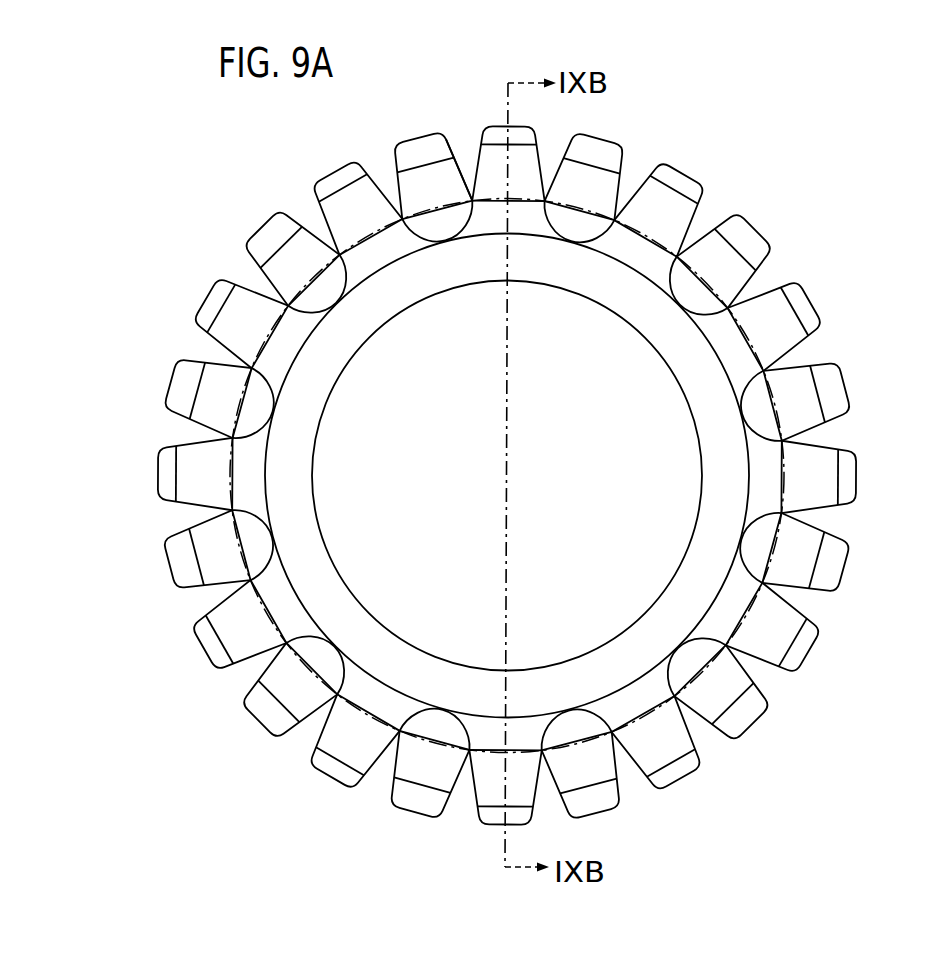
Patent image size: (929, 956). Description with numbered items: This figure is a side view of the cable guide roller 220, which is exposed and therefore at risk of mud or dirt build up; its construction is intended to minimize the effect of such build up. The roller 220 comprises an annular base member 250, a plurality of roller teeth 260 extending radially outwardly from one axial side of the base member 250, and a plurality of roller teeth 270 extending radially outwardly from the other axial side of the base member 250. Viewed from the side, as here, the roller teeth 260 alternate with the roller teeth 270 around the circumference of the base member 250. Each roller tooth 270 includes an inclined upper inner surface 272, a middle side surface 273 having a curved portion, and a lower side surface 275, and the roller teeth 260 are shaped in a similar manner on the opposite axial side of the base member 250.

The roller 220 is at (252, 190).
The annular base member 250 is at (408, 290).
The roller teeth 260 is at (692, 173).
The roller teeth 270 is at (600, 137).
The inclined upper inner surface 272 is at (425, 150).
The middle side surface 273 is at (448, 182).
The lower side surface 275 is at (445, 222).